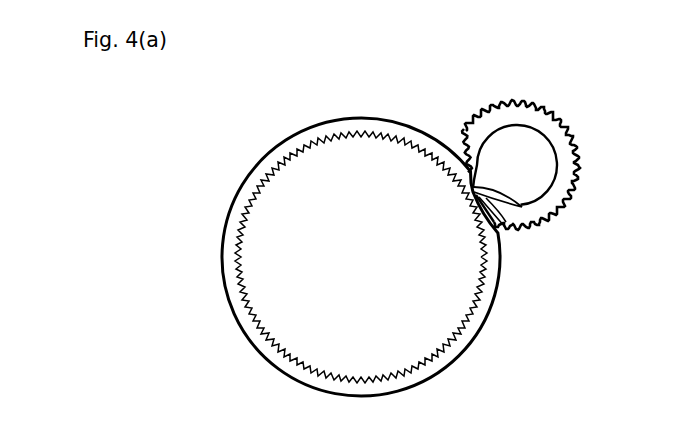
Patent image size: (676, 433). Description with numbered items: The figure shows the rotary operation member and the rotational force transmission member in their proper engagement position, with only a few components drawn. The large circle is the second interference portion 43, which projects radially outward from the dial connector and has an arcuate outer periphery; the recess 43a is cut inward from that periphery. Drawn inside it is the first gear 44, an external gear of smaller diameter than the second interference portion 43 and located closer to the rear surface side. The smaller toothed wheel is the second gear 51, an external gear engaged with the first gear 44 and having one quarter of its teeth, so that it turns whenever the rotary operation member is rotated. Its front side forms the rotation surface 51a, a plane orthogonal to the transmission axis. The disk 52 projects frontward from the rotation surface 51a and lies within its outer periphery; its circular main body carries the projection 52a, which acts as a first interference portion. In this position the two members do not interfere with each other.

The second interference portion 43 is at (374, 119).
The recess 43a is at (505, 227).
The first gear 44 is at (303, 145).
The second gear 51 is at (518, 102).
The rotation surface 51a is at (547, 128).
The disk 52 is at (530, 149).
The projection 52a is at (525, 208).